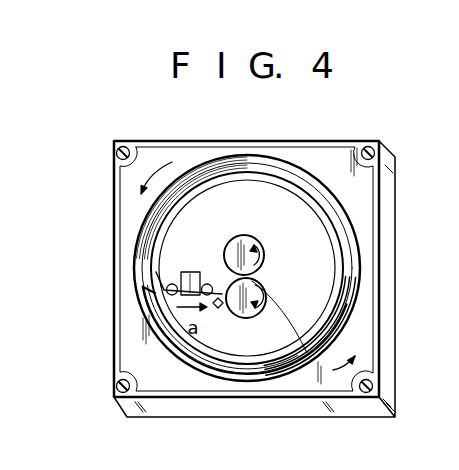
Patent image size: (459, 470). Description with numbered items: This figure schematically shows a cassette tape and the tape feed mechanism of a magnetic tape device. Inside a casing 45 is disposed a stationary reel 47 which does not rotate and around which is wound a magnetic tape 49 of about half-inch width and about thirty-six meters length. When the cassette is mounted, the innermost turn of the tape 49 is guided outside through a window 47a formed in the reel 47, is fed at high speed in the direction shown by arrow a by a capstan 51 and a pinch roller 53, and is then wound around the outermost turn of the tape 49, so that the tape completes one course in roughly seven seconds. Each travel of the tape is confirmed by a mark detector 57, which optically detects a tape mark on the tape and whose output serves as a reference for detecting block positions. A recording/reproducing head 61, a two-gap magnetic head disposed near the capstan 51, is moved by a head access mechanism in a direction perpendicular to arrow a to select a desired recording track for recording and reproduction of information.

The casing 45 is at (337, 141).
The stationary reel 47 is at (331, 231).
The window 47a is at (145, 273).
The magnetic tape 49 is at (141, 221).
The capstan 51 is at (246, 235).
The pinch roller 53 is at (253, 317).
The mark detector 57 is at (220, 306).
The recording/reproducing head 61 is at (191, 271).